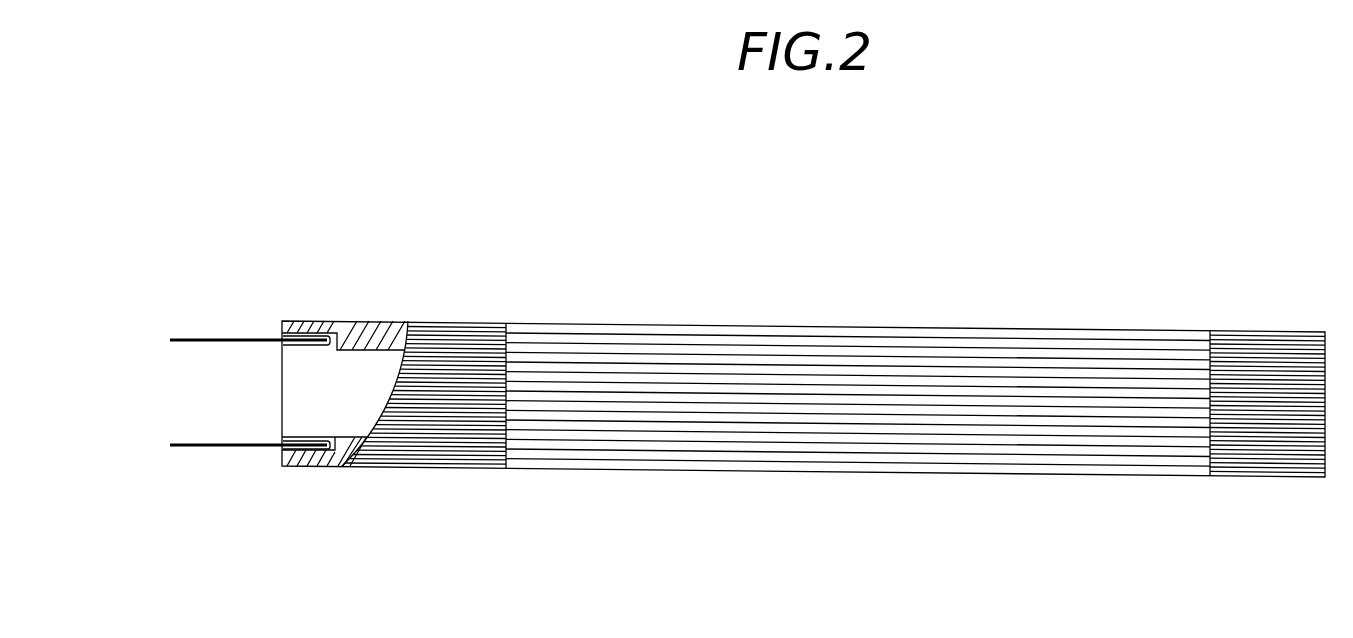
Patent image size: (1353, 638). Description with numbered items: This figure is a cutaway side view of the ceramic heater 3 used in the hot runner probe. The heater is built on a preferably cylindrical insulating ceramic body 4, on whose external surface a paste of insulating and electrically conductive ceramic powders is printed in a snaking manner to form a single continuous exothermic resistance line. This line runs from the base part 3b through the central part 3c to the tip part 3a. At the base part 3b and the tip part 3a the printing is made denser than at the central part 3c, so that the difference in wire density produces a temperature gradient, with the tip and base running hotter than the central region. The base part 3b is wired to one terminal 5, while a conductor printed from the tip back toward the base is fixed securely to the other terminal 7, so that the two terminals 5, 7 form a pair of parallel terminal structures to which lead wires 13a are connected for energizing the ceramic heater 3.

The ceramic heater 3 is at (990, 326).
The tip part 3a is at (1243, 332).
The base part 3b is at (457, 458).
The central part 3c is at (747, 323).
The insulating ceramic body 4 is at (377, 332).
The terminal 5 is at (300, 352).
The terminal 7 is at (305, 442).
The lead wires 13a is at (208, 341).